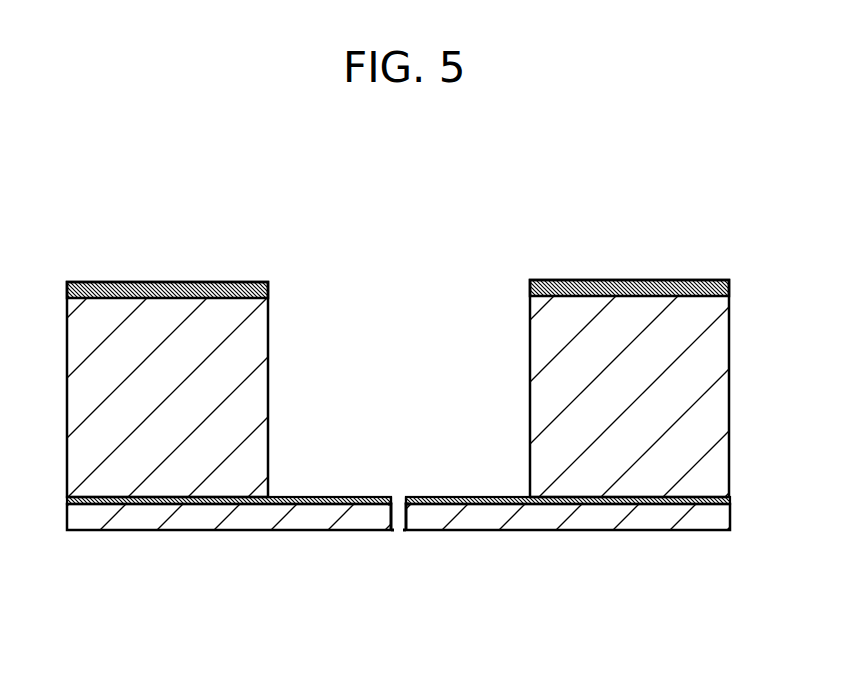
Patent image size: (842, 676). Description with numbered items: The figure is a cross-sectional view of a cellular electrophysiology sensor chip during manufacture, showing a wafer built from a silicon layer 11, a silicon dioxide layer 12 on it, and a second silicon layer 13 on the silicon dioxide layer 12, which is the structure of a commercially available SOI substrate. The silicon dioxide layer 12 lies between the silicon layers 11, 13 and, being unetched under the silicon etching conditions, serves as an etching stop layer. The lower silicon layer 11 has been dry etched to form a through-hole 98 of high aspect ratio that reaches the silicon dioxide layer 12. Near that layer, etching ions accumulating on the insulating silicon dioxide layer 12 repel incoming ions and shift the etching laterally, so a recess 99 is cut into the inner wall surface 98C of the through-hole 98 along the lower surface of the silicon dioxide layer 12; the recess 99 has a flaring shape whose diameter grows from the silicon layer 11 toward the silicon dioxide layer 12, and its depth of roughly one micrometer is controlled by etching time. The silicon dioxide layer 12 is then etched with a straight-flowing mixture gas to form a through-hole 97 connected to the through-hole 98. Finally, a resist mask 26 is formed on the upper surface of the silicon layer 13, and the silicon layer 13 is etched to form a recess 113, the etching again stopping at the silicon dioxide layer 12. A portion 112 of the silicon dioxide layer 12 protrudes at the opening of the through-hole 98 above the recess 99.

The silicon layer 11 is at (90, 520).
The silicon dioxide layer 12 is at (706, 501).
The silicon layer 13 is at (200, 330).
The resist mask 26 is at (553, 297).
The through-hole 97 is at (396, 525).
The through-hole 98 is at (399, 528).
The inner wall surface 98C is at (386, 533).
The recess 99 is at (386, 522).
The portion of silicon dioxide layer 112 is at (388, 496).
The recess 113 is at (376, 324).